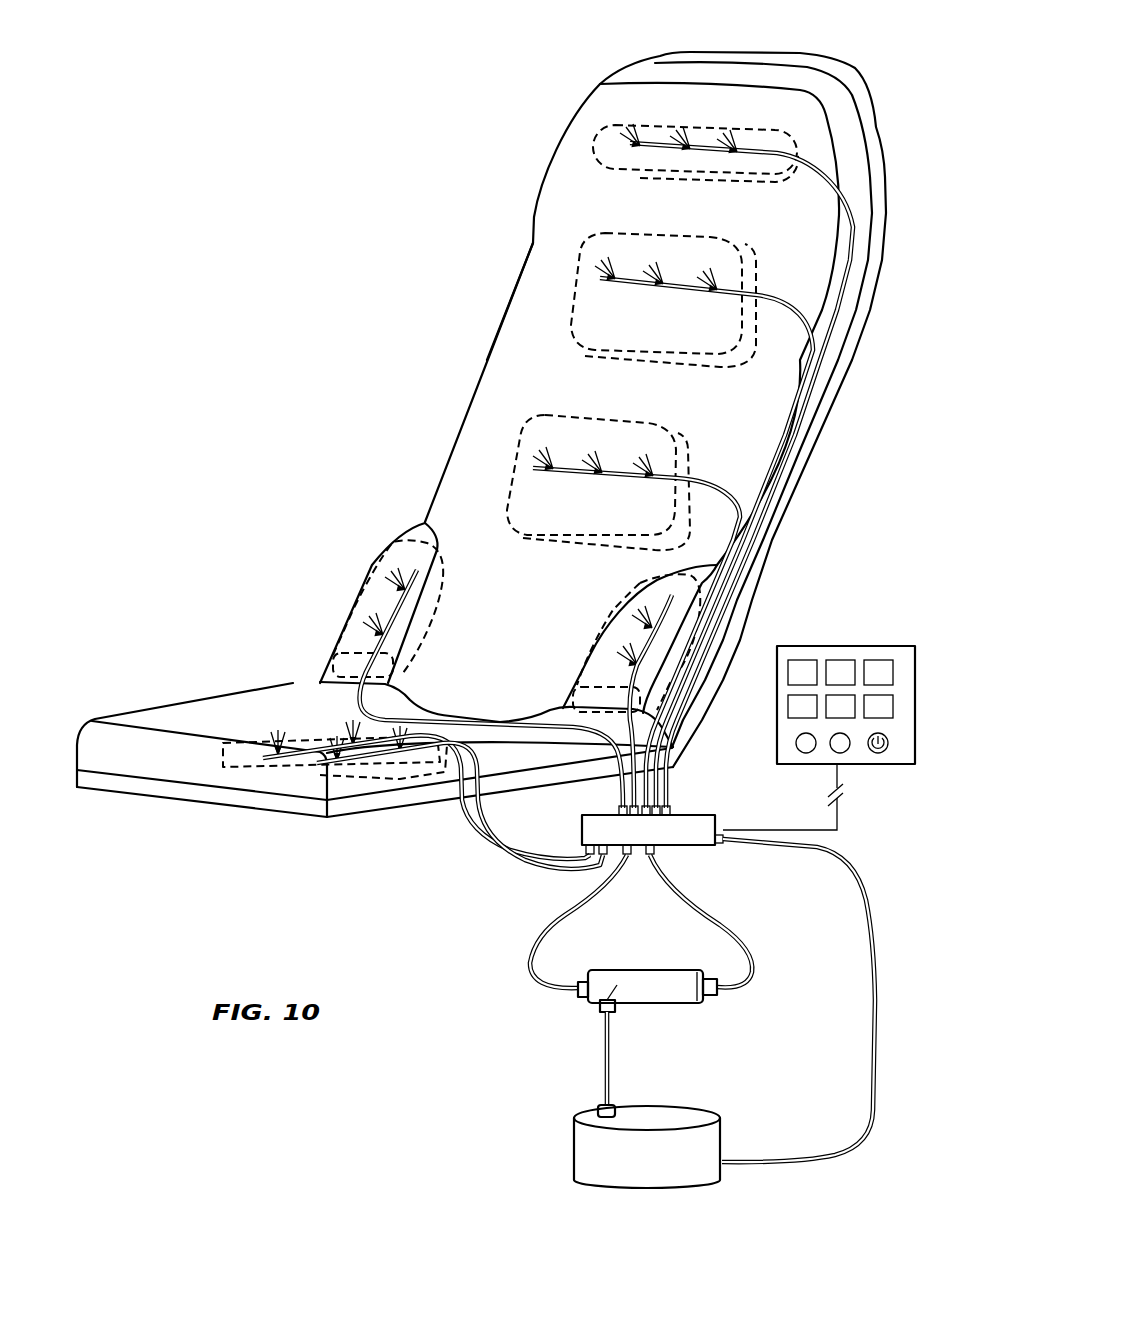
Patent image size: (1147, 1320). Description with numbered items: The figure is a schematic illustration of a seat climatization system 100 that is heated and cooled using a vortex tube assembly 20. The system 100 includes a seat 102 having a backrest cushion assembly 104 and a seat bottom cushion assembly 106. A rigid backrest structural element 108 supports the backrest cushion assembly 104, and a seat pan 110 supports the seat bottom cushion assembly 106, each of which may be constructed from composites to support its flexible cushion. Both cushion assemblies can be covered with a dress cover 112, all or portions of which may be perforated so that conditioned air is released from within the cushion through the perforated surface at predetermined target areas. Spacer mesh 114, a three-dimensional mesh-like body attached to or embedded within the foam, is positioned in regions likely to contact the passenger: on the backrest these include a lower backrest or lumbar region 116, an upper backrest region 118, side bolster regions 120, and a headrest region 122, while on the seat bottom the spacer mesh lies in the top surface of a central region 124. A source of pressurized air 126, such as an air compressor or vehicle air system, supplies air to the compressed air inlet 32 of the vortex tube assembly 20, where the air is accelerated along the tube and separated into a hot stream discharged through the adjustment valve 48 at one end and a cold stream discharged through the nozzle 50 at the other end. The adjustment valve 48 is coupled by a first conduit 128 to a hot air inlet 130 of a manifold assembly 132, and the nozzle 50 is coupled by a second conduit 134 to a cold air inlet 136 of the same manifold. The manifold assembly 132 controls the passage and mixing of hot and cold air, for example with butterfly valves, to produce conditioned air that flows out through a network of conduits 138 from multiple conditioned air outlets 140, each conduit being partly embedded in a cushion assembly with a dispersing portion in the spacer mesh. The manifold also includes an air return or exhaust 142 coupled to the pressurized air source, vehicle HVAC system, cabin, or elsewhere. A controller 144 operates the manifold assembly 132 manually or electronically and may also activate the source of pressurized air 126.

The seat climatization system 100 is at (322, 276).
The seat 102 is at (533, 203).
The backrest cushion assembly 104 is at (530, 293).
The seat bottom cushion assembly 106 is at (203, 710).
The backrest structural element 108 is at (880, 143).
The seat pan 110 is at (135, 787).
The dress cover 112 is at (463, 462).
The spacer mesh 114 is at (706, 337).
The lower backrest or lumbar region 116 is at (693, 462).
The upper backrest region 118 is at (757, 283).
The side bolster regions 120 is at (398, 545).
The headrest region 122 is at (772, 137).
The central region 124 is at (247, 770).
The source of pressurized air 126 is at (723, 1142).
The first conduit 128 is at (752, 975).
The hot air inlet 130 is at (657, 857).
The manifold assembly 132 is at (693, 850).
The second conduit 134 is at (527, 955).
The cold air inlet 136 is at (620, 855).
The network of conduits 138 is at (505, 840).
The conditioned air outlets 140 is at (619, 806).
The air return or exhaust 142 is at (720, 843).
The controller 144 is at (898, 645).
The vortex tube assembly 20 is at (673, 1003).
The compressed air inlet 32 is at (600, 1008).
The adjustment valve 48 is at (718, 993).
The nozzle 50 is at (578, 987).